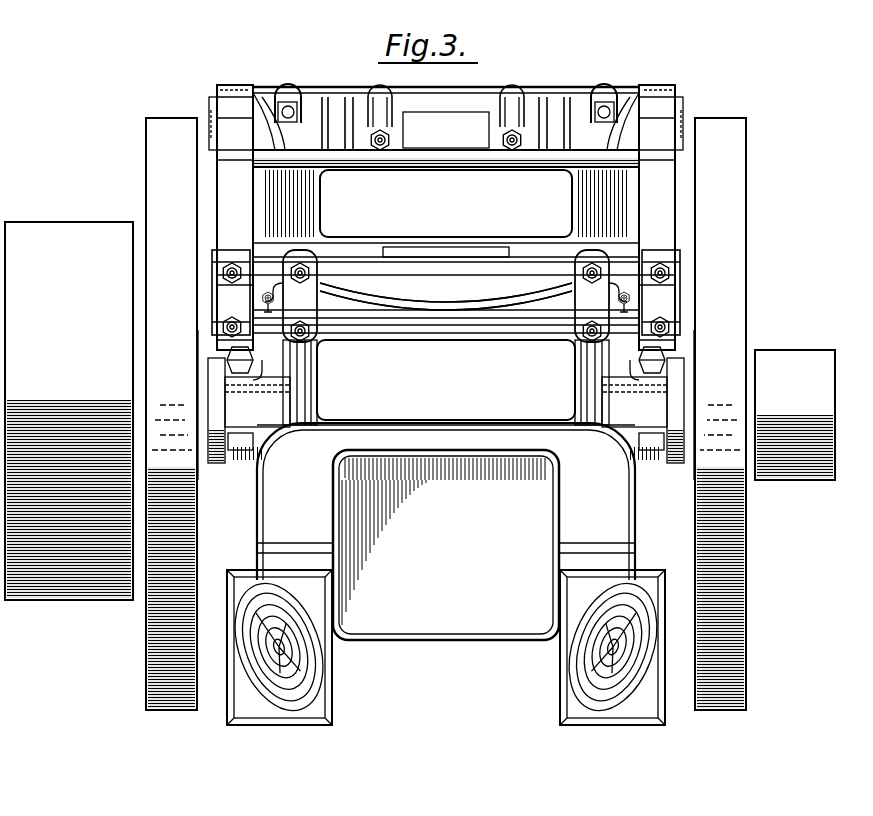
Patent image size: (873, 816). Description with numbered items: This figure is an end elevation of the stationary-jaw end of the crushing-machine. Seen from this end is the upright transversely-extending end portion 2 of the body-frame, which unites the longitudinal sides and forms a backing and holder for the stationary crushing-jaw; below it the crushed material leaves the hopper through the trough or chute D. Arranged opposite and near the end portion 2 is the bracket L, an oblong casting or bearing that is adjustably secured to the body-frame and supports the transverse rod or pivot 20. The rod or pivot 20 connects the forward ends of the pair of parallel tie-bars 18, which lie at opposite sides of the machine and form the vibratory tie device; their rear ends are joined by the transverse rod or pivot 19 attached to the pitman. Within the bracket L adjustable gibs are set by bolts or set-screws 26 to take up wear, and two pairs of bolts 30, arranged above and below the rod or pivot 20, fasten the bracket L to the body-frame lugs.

The tie-bars 18 is at (220, 193).
The transverse rod or pivot 19 is at (211, 116).
The transverse rod or pivot 20 is at (212, 288).
The bolts or set-screws 26 is at (262, 300).
The bolts 30 is at (318, 273).
The end portion 2 is at (446, 295).
The bracket L is at (446, 287).
The trough or chute D is at (446, 545).